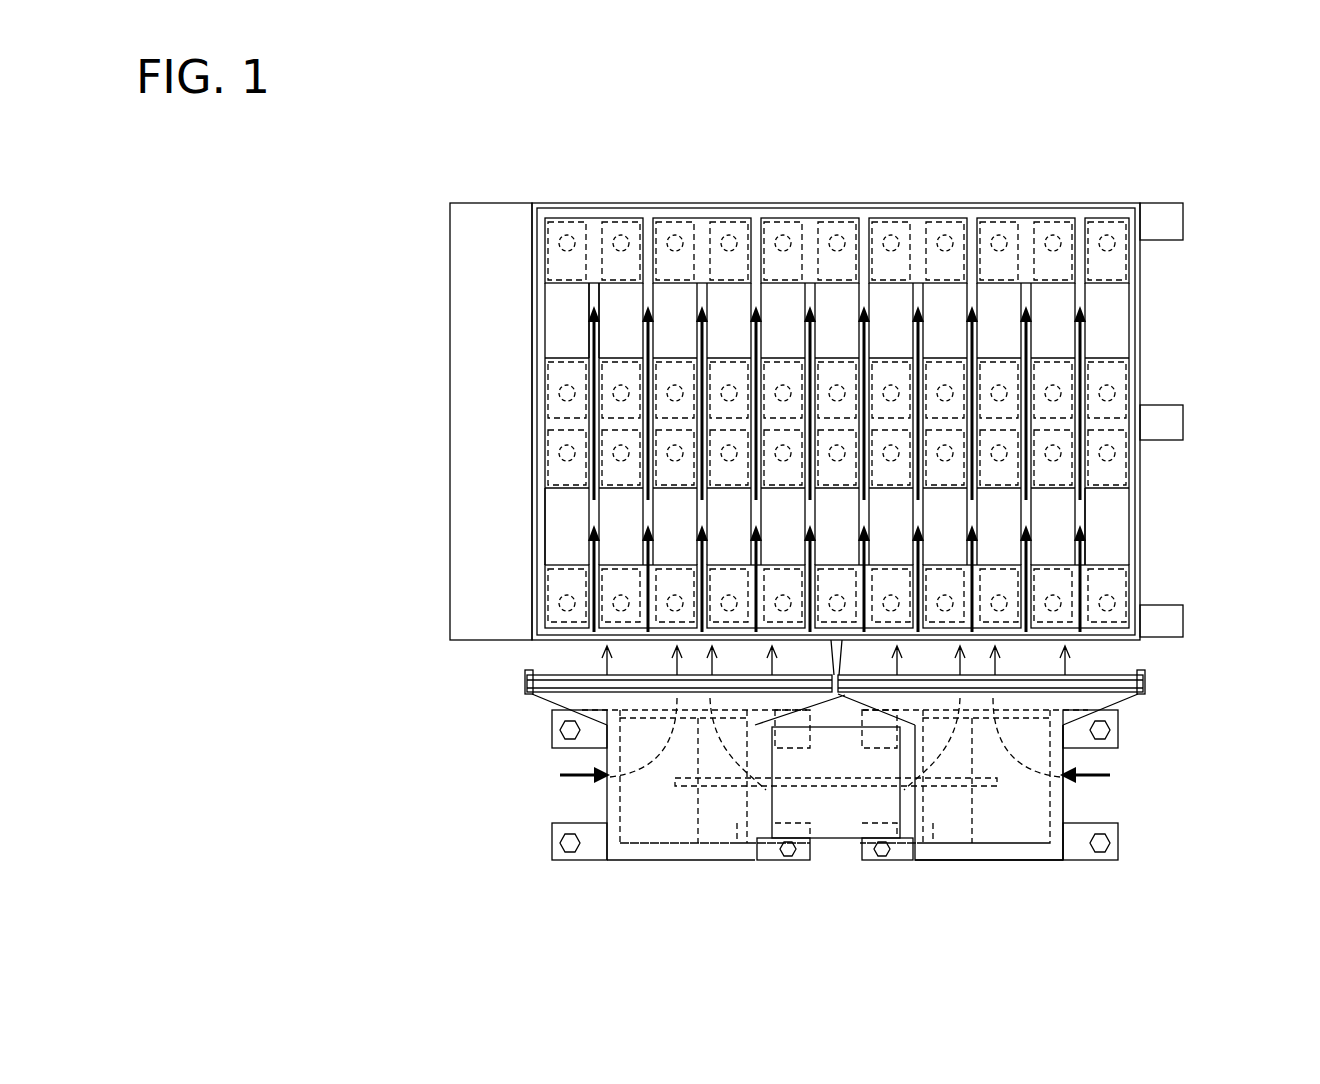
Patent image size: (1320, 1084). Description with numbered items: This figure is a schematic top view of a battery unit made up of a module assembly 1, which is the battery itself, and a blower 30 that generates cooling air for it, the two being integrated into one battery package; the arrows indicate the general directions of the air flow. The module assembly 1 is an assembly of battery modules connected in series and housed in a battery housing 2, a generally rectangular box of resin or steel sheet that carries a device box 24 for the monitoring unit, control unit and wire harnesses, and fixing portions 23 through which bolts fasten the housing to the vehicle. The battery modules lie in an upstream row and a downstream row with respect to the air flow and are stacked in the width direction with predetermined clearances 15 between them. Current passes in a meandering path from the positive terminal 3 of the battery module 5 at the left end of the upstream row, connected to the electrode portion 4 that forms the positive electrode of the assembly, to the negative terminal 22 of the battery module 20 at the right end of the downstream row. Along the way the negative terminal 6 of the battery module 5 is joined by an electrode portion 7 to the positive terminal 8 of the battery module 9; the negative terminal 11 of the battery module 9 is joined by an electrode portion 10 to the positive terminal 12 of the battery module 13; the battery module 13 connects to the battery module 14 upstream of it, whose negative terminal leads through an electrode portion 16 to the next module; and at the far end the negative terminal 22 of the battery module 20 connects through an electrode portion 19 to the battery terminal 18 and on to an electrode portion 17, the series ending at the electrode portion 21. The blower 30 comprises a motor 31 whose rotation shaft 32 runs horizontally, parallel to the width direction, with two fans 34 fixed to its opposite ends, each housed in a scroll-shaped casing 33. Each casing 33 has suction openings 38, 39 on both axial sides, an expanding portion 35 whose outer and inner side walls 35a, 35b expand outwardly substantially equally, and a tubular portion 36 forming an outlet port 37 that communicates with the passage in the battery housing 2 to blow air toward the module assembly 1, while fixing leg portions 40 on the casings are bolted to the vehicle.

The module assembly 1 is at (1172, 351).
The battery housing 2 is at (1140, 497).
The positive terminal 3 is at (527, 680).
The electrode portion 4 is at (555, 581).
The battery module 5 is at (547, 538).
The negative terminal 6 is at (553, 455).
The electrode portion 7 is at (553, 470).
The positive terminal 8 is at (553, 392).
The battery module 9 is at (548, 293).
The electrode portion 10 is at (548, 243).
The negative terminal 11 is at (566, 233).
The positive terminal 12 is at (621, 233).
The battery module 13 is at (600, 305).
The battery module 14 is at (613, 550).
The clearances 15 is at (593, 508).
The electrode portion 16 is at (663, 617).
The electrode portion 17 is at (1113, 576).
The battery terminal 18 is at (1108, 520).
The electrode portion 19 is at (1115, 468).
The battery module 20 is at (1117, 298).
The electrode portion 21 is at (1117, 263).
The negative terminal 22 is at (1110, 232).
The fixing portions 23 is at (1108, 637).
The device box 24 is at (452, 547).
The blower 30 is at (1158, 766).
The motor 31 is at (856, 840).
The rotation shaft 32 is at (728, 786).
The casings 33 is at (688, 858).
The fans 34 is at (645, 845).
The expanding portion 35 is at (558, 698).
The outer side wall 35a is at (1117, 702).
The inner side wall 35b is at (847, 700).
The tubular portion 36 is at (535, 652).
The outlet port 37 is at (537, 707).
The suction opening 38 is at (607, 808).
The suction opening 39 is at (762, 860).
The fixing leg portions 40 is at (582, 858).